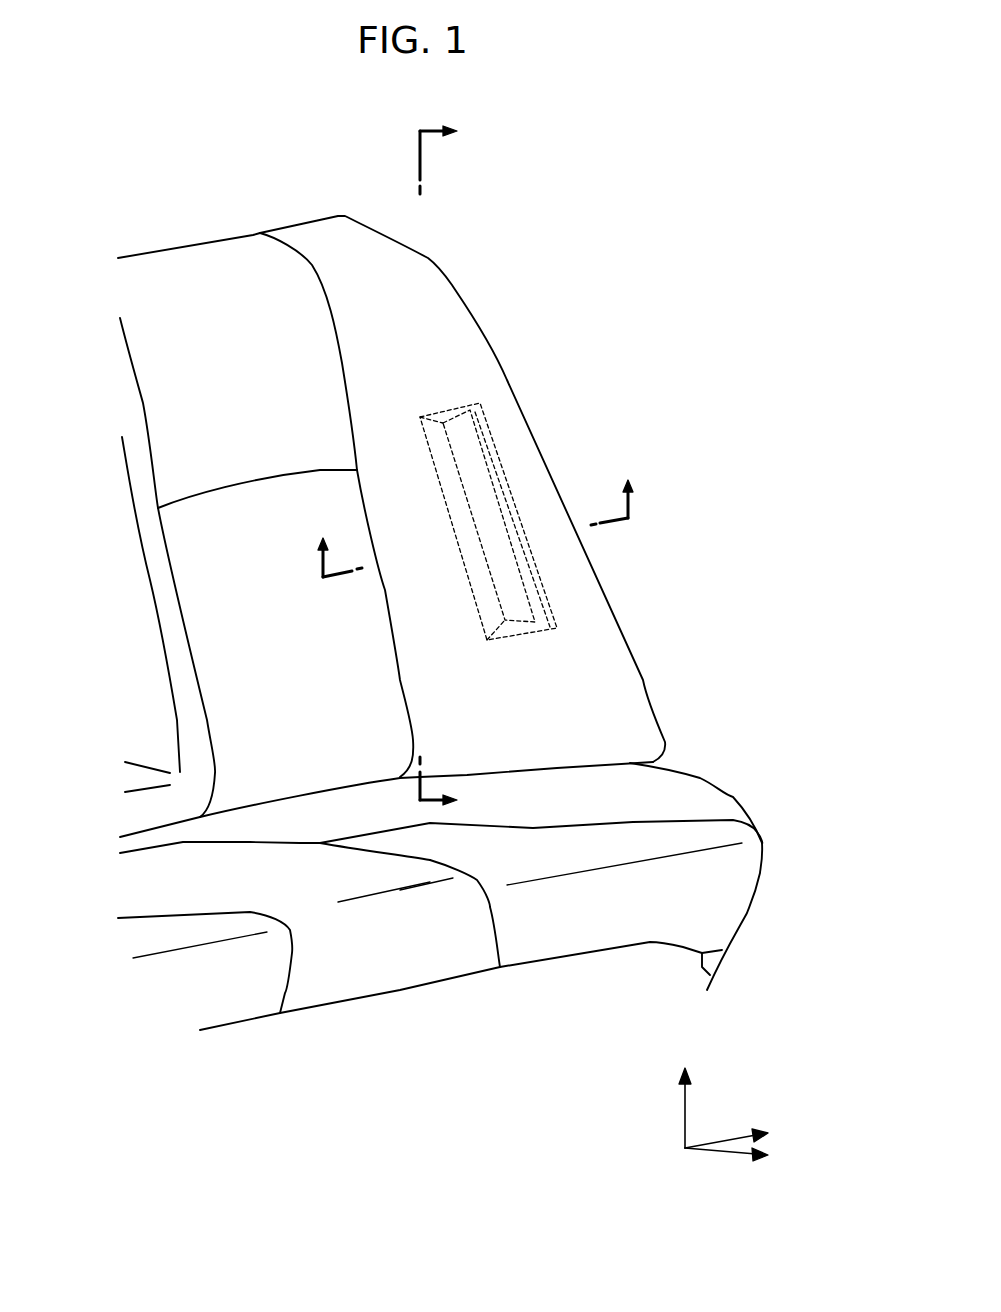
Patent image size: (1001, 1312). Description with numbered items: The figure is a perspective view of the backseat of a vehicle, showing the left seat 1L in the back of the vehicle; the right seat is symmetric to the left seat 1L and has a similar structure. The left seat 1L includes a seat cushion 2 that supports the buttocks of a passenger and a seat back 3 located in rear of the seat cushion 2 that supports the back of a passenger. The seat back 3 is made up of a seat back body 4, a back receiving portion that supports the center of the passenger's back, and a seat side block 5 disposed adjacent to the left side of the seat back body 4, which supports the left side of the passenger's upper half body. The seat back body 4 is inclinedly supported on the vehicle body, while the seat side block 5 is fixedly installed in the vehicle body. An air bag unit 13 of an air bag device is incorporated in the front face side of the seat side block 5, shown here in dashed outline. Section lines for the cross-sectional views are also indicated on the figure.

The left seat 1L is at (428, 256).
The seat cushion 2 is at (630, 837).
The seat back 3 is at (391, 497).
The seat back body 4 is at (182, 277).
The seat side block 5 is at (430, 280).
The air bag unit 13 is at (498, 452).